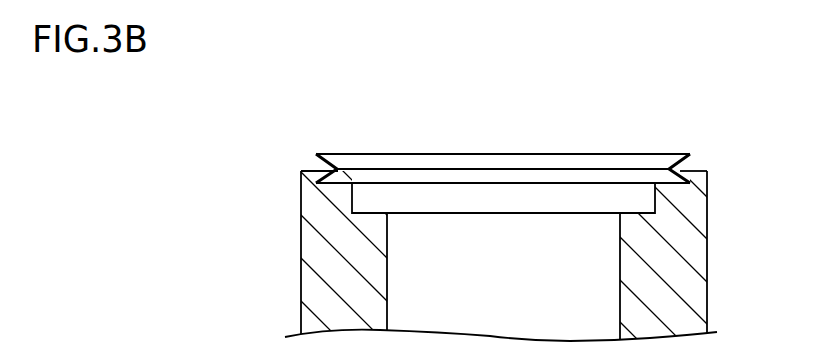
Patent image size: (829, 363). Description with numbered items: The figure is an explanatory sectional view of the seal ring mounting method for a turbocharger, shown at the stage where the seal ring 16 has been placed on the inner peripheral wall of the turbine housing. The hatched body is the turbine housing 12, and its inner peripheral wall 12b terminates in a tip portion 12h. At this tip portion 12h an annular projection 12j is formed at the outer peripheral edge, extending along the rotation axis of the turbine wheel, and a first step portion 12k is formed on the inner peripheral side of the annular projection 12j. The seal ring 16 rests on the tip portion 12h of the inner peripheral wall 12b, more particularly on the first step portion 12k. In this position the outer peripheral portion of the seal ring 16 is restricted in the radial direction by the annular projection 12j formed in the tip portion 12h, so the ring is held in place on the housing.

The turbine housing 12 is at (277, 218).
The inner peripheral wall 12b is at (299, 266).
The tip portion 12h is at (313, 195).
The first step portion 12k is at (344, 176).
The annular projection 12j is at (694, 171).
The seal ring 16 is at (500, 154).